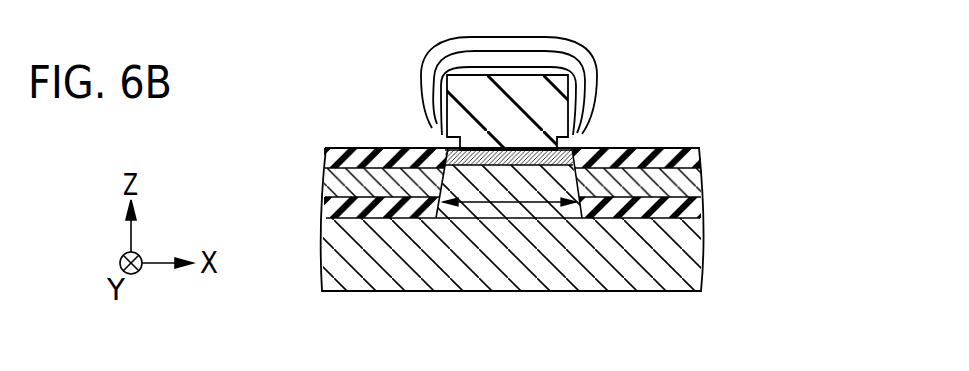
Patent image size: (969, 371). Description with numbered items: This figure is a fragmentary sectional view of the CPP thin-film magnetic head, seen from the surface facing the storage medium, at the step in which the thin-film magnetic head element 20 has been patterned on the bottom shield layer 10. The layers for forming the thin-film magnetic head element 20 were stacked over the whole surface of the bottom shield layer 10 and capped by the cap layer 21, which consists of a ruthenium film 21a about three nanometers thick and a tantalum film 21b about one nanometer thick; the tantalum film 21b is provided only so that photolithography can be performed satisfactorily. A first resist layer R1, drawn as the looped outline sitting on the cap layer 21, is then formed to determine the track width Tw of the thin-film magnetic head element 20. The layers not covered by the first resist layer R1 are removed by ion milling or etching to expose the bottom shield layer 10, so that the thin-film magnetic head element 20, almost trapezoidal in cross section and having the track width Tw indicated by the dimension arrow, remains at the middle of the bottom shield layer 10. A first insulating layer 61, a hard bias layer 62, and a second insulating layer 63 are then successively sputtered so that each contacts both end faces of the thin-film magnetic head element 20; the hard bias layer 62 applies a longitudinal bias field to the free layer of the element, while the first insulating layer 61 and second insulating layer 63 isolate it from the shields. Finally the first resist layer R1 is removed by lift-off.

The bottom shield layer 10 is at (685, 253).
The thin-film magnetic head element 20 is at (509, 238).
The cap layer 21 is at (419, 108).
The ruthenium film 21a is at (447, 150).
The tantalum film 21b is at (432, 135).
The first insulating layer 61 is at (330, 208).
The hard bias layer 62 is at (330, 185).
The second insulating layer 63 is at (327, 162).
The first resist layer R1 is at (558, 111).
The track width Tw is at (509, 190).